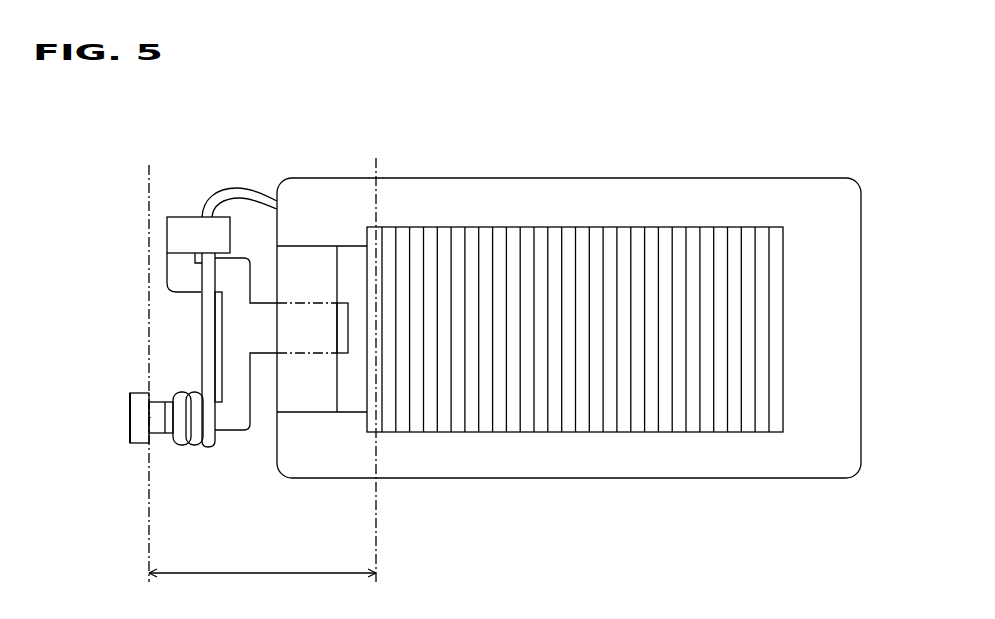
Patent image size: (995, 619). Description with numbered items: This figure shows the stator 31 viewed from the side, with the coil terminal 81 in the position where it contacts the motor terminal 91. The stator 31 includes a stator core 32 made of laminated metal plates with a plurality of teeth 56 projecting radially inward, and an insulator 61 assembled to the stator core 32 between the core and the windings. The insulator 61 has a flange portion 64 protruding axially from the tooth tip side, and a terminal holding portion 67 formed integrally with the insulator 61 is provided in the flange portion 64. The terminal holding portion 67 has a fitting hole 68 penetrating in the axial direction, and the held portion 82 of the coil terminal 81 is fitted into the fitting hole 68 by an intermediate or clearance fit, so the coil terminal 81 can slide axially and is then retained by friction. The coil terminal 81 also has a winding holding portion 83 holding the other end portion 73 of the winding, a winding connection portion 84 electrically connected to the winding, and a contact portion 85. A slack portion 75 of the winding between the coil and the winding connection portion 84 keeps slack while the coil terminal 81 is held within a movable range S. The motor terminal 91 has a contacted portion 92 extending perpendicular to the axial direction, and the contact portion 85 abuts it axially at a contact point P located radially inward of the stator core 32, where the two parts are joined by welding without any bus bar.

The stator 31 is at (569, 330).
The stator core 32 is at (575, 338).
The teeth 56 is at (612, 398).
The insulator 61 is at (322, 178).
The flange portion 64 is at (553, 452).
The terminal holding portion 67 is at (302, 388).
The fitting hole 68 is at (297, 336).
The other end portion 73 is at (207, 345).
The slack portion 75 is at (238, 197).
The coil terminal 81 is at (161, 210).
The held portion 82 is at (297, 335).
The winding holding portion 83 is at (197, 432).
The winding connection portion 84 is at (195, 235).
The contact portion 85 is at (153, 426).
The motor terminal 91 is at (138, 392).
The contacted portion 92 is at (134, 410).
The contact point P is at (157, 424).
The movable range S is at (262, 561).